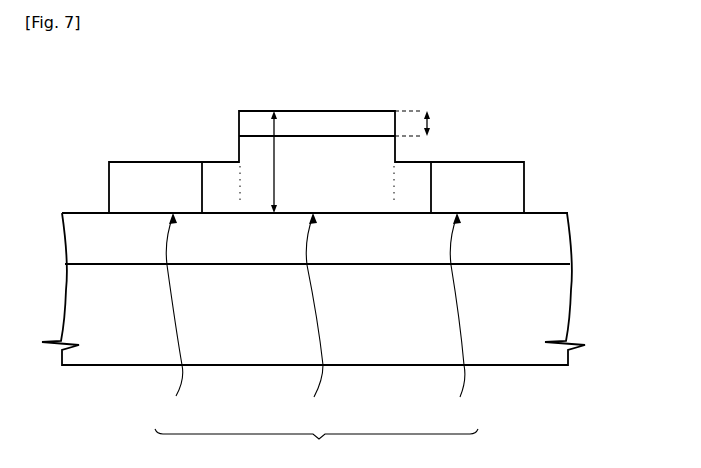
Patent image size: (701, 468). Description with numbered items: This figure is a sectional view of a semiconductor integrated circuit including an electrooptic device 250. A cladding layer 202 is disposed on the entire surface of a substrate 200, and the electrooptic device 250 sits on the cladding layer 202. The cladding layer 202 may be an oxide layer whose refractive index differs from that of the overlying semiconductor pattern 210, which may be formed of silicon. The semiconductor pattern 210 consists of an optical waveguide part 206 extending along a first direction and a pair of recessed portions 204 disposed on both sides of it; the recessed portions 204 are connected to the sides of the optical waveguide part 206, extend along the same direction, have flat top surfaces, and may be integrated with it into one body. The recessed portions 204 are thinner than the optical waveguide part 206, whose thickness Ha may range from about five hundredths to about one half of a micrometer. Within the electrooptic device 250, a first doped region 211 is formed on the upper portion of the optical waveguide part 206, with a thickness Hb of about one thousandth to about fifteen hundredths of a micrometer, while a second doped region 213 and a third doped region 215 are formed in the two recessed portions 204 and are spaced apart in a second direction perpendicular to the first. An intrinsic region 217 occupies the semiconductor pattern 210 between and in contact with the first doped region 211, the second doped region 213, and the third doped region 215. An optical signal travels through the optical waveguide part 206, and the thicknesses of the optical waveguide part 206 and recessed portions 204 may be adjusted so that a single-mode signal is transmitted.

The electrooptic device 250 is at (516, 68).
The first doped region 211 is at (250, 123).
The intrinsic region 217 is at (363, 180).
The second doped region 213 is at (124, 187).
The third doped region 215 is at (508, 186).
The cladding layer 202 is at (558, 242).
The substrate 200 is at (555, 305).
The recessed portions 204 is at (316, 318).
The optical waveguide part 206 is at (314, 318).
The semiconductor pattern 210 is at (316, 446).